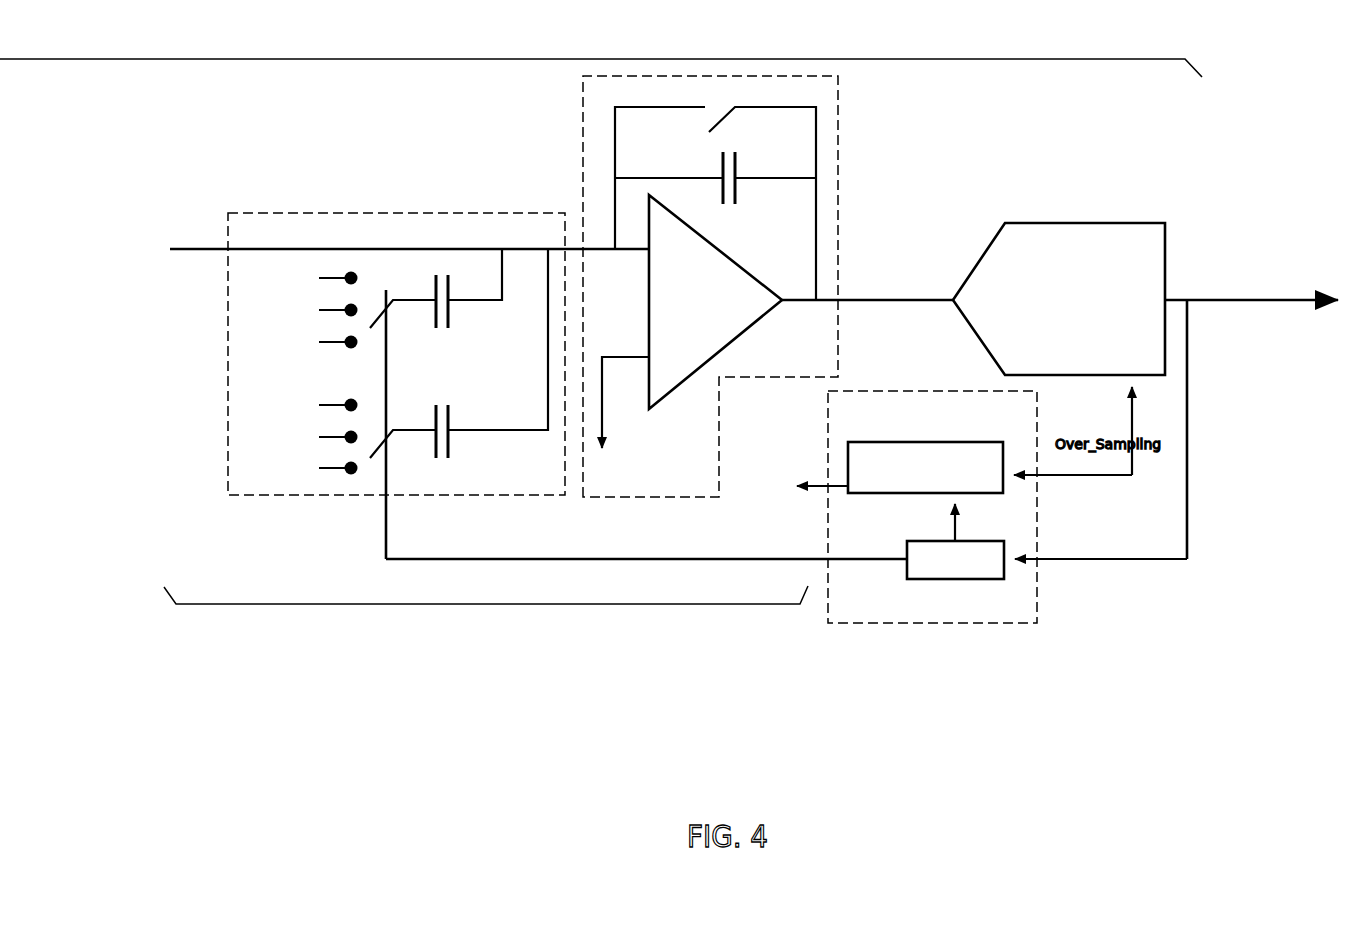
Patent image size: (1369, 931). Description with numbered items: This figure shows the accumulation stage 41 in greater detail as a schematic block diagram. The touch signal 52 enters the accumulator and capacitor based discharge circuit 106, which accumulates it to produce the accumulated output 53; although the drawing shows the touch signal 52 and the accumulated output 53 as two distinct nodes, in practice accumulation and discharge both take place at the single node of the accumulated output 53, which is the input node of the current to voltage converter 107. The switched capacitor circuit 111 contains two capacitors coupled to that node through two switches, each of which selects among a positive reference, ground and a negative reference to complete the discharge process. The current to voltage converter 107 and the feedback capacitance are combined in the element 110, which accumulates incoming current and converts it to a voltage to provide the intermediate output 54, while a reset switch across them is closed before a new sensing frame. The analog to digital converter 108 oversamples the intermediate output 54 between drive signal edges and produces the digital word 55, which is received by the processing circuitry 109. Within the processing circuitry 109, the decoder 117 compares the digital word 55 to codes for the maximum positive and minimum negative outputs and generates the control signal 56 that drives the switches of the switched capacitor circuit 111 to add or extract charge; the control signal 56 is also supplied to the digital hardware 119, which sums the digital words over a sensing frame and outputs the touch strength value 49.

The accumulation stage 41 is at (400, 59).
The accumulator and capacitor based discharge circuit 106 is at (368, 604).
The switched capacitor circuit 111 is at (228, 373).
The element combining amplifier and capacitance Ca 110 is at (582, 138).
The current to voltage converter 107 is at (668, 395).
The analog to digital converter 108 is at (967, 322).
The processing circuitry 109 is at (892, 623).
The digital hardware 119 is at (892, 442).
The decoder or control circuitry 117 is at (985, 580).
The touch signal 52 is at (409, 236).
The accumulated output 53 is at (618, 267).
The intermediate output 54 is at (867, 290).
The digital word 55 is at (1251, 418).
The control signal 56 is at (786, 533).
The touch strength value 49 is at (798, 485).